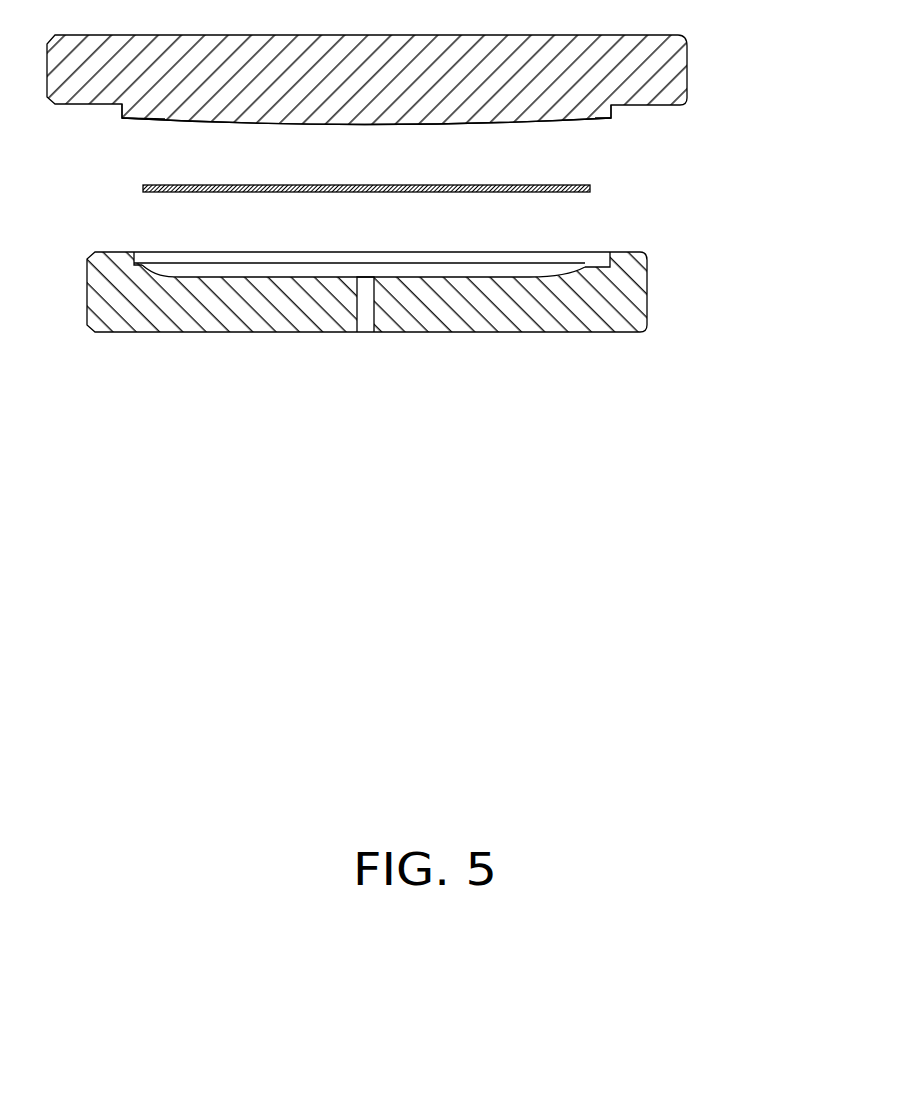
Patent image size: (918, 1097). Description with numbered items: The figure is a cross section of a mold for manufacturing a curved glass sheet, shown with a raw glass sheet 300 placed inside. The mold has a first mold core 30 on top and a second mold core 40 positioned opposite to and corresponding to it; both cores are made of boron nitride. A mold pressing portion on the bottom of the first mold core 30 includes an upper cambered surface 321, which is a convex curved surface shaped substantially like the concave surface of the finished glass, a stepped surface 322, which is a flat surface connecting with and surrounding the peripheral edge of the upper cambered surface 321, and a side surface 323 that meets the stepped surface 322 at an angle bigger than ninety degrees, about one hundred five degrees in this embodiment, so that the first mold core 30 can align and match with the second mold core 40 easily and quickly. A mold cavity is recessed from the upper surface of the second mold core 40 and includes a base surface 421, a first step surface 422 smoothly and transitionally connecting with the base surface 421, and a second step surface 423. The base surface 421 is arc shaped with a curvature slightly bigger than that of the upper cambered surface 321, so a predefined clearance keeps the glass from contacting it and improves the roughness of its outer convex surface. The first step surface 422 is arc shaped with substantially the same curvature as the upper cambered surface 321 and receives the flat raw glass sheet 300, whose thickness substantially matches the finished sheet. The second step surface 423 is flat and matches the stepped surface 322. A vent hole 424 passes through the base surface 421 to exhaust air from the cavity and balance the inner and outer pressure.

The first mold core 30 is at (665, 77).
The upper cambered surface 321 is at (163, 120).
The stepped surface 322 is at (603, 118).
The side surface 323 is at (612, 108).
The raw glass sheet 300 is at (448, 185).
The second mold core 40 is at (628, 300).
The base surface 421 is at (480, 283).
The first step surface 422 is at (582, 264).
The second step surface 423 is at (135, 262).
The vent hole 424 is at (367, 315).